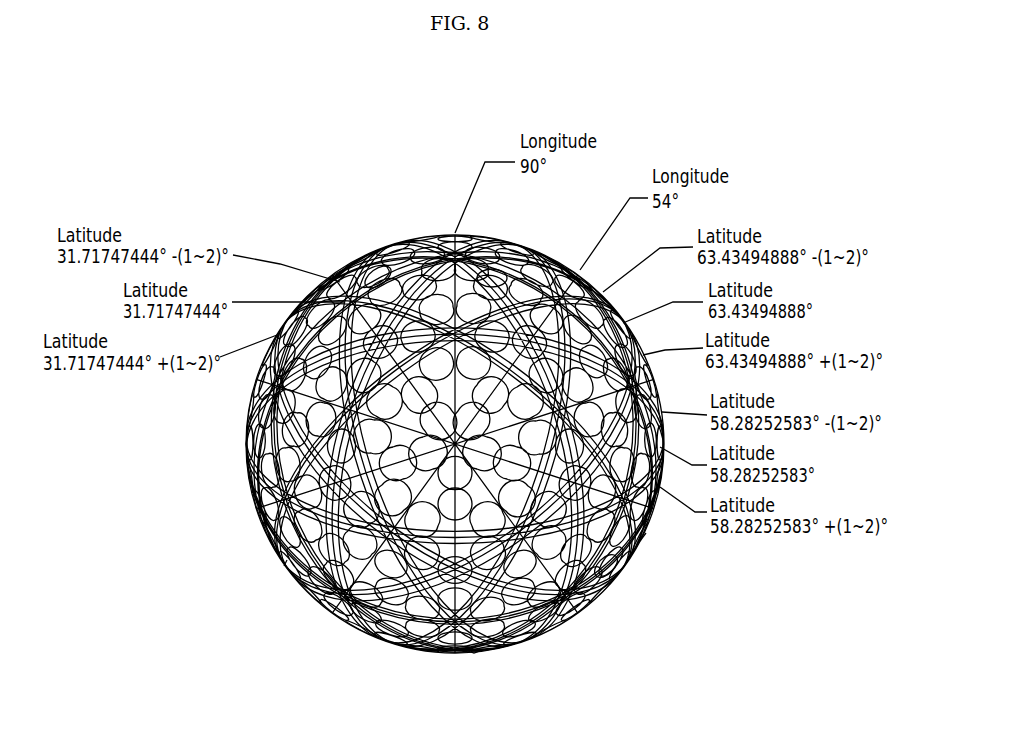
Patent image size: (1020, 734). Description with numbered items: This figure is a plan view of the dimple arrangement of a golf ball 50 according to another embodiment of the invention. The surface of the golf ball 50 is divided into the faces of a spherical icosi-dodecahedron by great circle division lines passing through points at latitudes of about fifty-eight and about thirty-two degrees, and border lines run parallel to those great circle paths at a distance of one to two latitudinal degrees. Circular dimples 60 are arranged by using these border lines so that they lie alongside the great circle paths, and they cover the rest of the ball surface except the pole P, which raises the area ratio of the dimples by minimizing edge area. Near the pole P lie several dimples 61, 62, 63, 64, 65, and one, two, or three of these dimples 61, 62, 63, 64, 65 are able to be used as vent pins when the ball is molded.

The golf ball 50 is at (257, 153).
The circular dimples 60 is at (643, 537).
The dimple 61 is at (493, 268).
The dimple 62 is at (613, 573).
The dimple 63 is at (474, 653).
The dimple 64 is at (247, 449).
The dimple 65 is at (372, 266).
The pole P is at (285, 564).